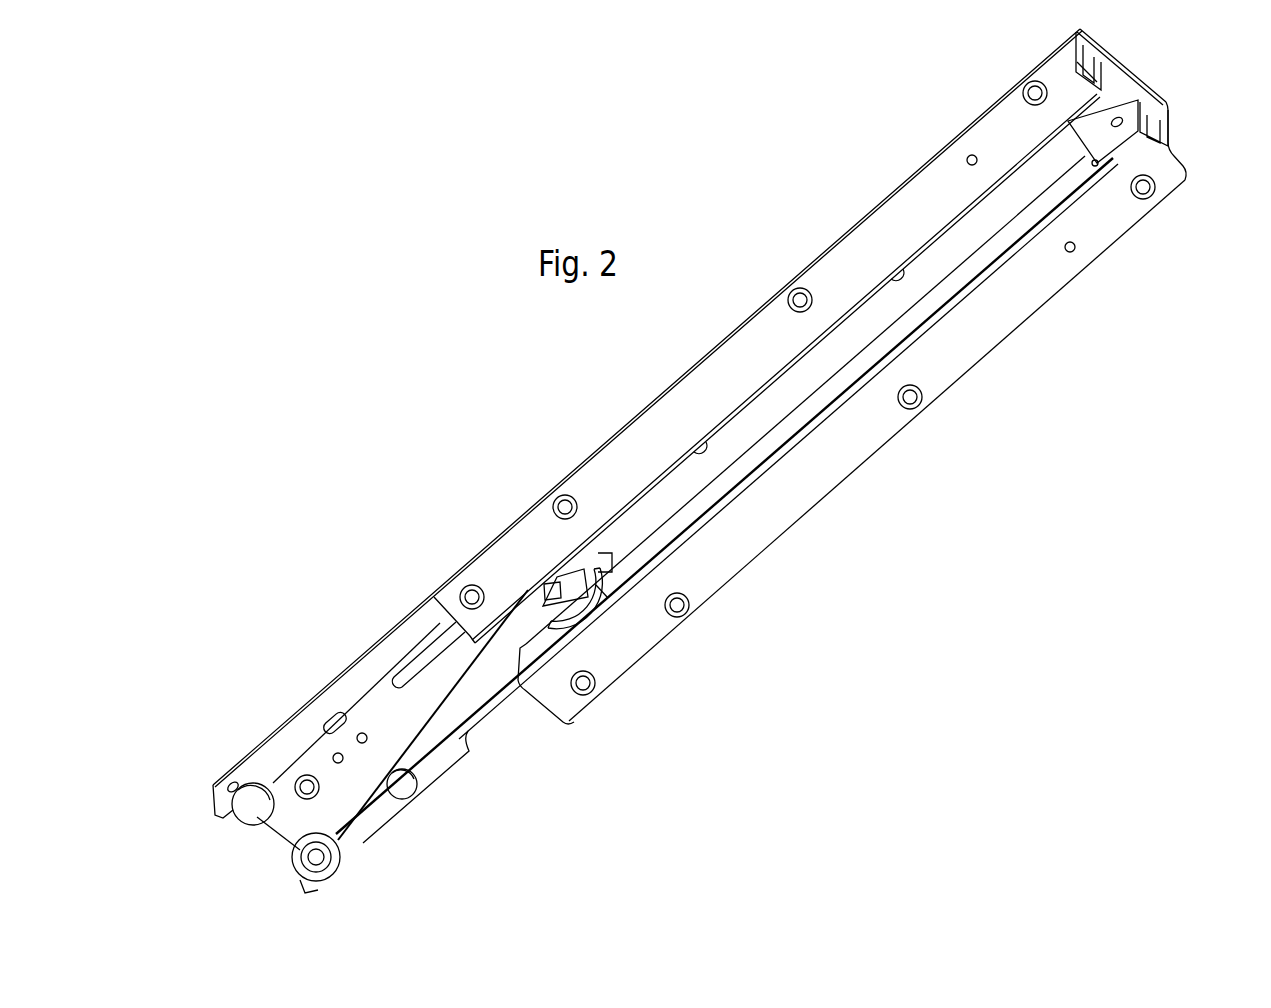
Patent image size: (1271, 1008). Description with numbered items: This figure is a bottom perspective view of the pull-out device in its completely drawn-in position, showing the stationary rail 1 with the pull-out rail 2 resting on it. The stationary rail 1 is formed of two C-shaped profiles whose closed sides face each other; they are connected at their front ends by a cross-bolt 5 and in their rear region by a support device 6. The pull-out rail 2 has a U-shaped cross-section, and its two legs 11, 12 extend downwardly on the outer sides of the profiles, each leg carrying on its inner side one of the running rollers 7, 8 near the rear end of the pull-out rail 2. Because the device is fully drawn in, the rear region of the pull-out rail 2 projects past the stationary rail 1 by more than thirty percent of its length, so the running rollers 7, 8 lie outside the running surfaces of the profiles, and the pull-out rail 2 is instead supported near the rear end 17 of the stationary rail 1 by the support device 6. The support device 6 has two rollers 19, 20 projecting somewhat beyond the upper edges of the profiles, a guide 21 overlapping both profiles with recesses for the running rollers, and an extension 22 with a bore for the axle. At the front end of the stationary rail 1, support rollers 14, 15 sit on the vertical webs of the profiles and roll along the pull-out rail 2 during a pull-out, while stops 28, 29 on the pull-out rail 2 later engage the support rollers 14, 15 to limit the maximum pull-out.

The stationary rail 1 is at (853, 492).
The pull-out rail 2 is at (393, 622).
The cross-bolt 5 is at (1068, 139).
The support device 6 is at (603, 592).
The running roller 7 is at (257, 797).
The running roller 8 is at (330, 858).
The leg 11 is at (360, 672).
The leg 12 is at (447, 762).
The support roller 14 is at (1088, 60).
The support roller 15 is at (1156, 128).
The rear end 17 is at (276, 838).
The roller 19 is at (551, 590).
The roller 20 is at (575, 617).
The guide 21 is at (603, 565).
The extension 22 is at (557, 597).
The stop 28 is at (415, 793).
The stop 29 is at (333, 722).